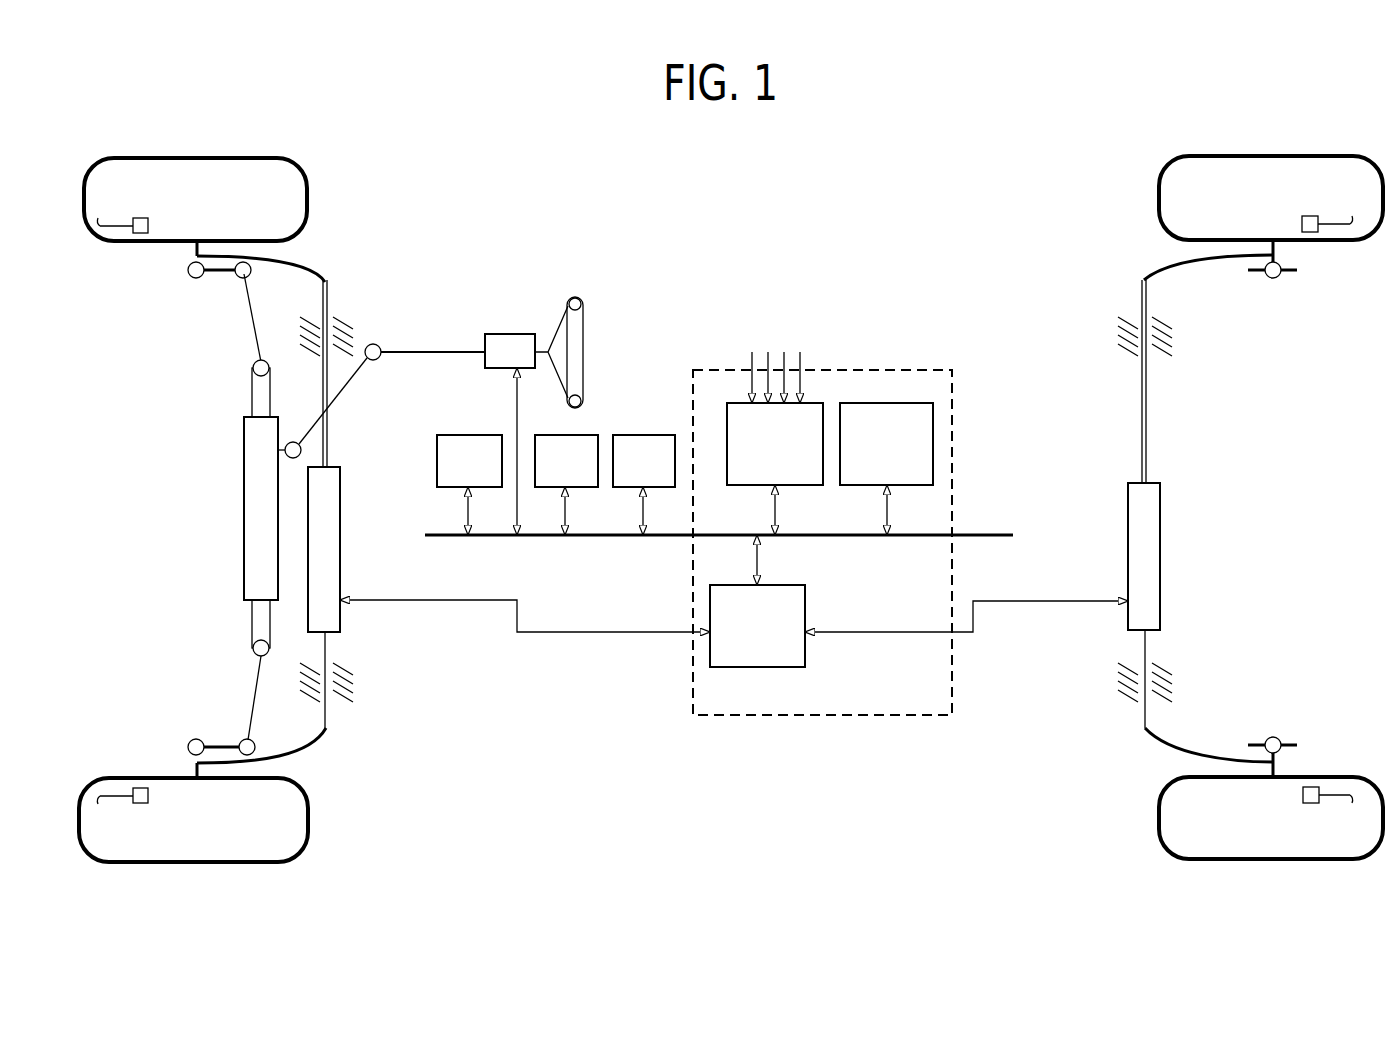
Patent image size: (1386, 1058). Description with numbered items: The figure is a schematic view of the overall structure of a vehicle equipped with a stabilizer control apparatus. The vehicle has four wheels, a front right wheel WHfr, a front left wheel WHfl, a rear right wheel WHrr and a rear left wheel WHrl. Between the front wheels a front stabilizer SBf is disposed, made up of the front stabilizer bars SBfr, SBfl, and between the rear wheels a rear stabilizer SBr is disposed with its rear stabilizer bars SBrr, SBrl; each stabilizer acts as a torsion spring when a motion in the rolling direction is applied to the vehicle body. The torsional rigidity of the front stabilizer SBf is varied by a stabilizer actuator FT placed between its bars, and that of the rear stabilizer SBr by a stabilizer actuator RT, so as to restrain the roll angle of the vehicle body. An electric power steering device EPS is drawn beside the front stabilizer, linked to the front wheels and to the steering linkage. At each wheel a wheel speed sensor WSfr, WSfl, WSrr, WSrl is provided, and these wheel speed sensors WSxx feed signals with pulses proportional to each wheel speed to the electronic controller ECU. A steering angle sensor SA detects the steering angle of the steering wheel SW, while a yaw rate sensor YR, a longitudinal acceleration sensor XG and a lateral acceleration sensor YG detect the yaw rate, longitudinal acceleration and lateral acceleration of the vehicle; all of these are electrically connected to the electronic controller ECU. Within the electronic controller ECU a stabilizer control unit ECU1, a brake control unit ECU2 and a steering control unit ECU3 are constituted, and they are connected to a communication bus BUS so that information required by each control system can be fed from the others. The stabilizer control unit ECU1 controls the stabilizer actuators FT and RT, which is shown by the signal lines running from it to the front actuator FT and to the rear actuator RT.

The vehicle wheel WHfr is at (195, 199).
The vehicle wheel WHfl is at (193, 820).
The vehicle wheel WHrr is at (1271, 198).
The vehicle wheel WHrl is at (1271, 818).
The wheel speed sensor WSfr is at (120, 246).
The wheel speed sensor WSfl is at (118, 773).
The wheel speed sensor WSrr is at (1328, 243).
The wheel speed sensor WSrl is at (1329, 774).
The wheel speed sensor WSxx is at (778, 362).
The front stabilizer SBf is at (313, 254).
The front stabilizer bar SBfr is at (326, 278).
The front stabilizer bar SBfl is at (328, 722).
The rear stabilizer SBr is at (1156, 257).
The rear stabilizer bar SBrr is at (1144, 278).
The rear stabilizer bar SBrl is at (1145, 730).
The stabilizer actuator FT is at (340, 523).
The stabilizer actuator RT is at (1160, 490).
The electric power steering device EPS is at (243, 455).
The steering angle sensor SA is at (458, 434).
The steering wheel SW is at (571, 298).
The yaw rate sensor YR is at (469, 485).
The longitudinal acceleration sensor XG is at (566, 485).
The lateral acceleration sensor YG is at (644, 485).
The communication bus BUS is at (720, 519).
The electronic controller ECU is at (845, 368).
The stabilizer control unit ECU1 is at (734, 601).
The brake control unit ECU2 is at (775, 469).
The steering control unit ECU3 is at (886, 469).